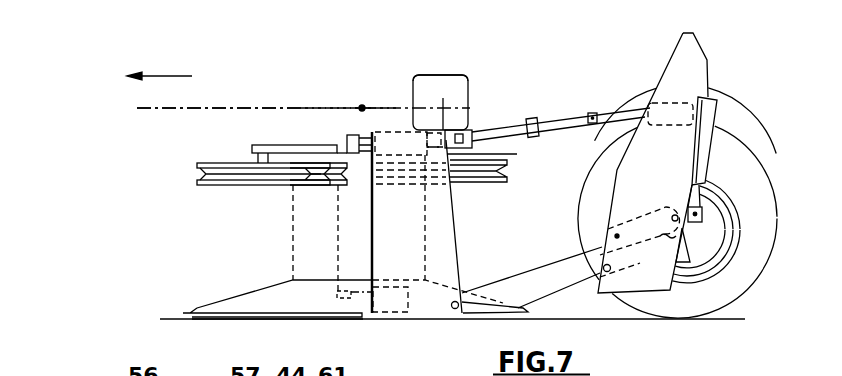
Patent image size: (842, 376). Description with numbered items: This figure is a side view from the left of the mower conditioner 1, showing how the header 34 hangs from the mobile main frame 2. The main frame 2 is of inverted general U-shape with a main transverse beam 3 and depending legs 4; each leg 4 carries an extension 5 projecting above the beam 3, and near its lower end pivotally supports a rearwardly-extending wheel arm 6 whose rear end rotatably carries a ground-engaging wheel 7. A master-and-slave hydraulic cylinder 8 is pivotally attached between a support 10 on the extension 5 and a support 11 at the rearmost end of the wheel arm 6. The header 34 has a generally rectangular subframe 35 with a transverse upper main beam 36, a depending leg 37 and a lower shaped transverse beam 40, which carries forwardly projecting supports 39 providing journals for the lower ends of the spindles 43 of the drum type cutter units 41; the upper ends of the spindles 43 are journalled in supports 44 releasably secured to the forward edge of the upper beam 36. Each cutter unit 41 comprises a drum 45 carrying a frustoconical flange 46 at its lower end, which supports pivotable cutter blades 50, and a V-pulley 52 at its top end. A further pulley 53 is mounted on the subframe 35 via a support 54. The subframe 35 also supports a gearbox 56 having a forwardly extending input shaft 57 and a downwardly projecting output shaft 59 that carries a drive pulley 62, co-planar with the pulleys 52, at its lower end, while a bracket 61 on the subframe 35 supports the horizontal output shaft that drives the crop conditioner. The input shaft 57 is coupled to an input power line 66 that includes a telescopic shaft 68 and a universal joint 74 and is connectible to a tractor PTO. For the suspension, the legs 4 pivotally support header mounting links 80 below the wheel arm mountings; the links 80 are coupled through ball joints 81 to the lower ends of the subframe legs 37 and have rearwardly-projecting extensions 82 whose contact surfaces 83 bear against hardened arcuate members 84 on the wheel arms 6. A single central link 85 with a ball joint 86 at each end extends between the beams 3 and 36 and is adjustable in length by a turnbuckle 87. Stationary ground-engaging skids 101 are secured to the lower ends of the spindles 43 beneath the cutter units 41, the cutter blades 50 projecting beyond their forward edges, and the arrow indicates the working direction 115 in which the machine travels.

The mower conditioner 1 is at (722, 71).
The mobile main frame 2 is at (610, 136).
The main transverse beam 3 is at (707, 85).
The depending legs 4 is at (607, 210).
The extensions 5 is at (675, 57).
The wheel arms 6 is at (702, 211).
The ground-engaging wheel 7 is at (767, 268).
The hydraulic cylinders 8 is at (715, 127).
The supports 10 is at (710, 98).
The supports 11 is at (717, 233).
The header 34 is at (128, 238).
The subframe 35 is at (370, 229).
The transverse upper main beam 36 is at (393, 133).
The depending leg 37 is at (370, 257).
The forwardly projecting supports 39 is at (347, 300).
The lower transverse beam 40 is at (408, 298).
The drum type cutter units 41 is at (293, 213).
The spindles 43 is at (350, 133).
The supports 44 is at (362, 106).
The drums 45 is at (293, 199).
The frustoconical flanges 46 is at (240, 296).
The cutter blades 50 is at (197, 312).
The V-pulleys 52 is at (347, 158).
The further pulley 53 is at (217, 163).
The support 54 is at (278, 146).
The gearbox 56 is at (463, 75).
The input shaft 57 is at (408, 103).
The output shaft 59 is at (507, 154).
The bracket 61 is at (454, 226).
The drive pulley 62 is at (512, 184).
The input power line 66 is at (227, 108).
The telescopic shaft 68 is at (333, 107).
The universal joint 74 is at (360, 106).
The header mounting links 80 is at (585, 285).
The ball joints 81 is at (455, 310).
The rearwardly-projecting extensions 82 is at (687, 232).
The contact surfaces 83 is at (648, 242).
The hardened arcuate members 84 is at (690, 236).
The central link 85 is at (570, 119).
The ball joint 86 is at (462, 130).
The turnbuckle 87 is at (537, 120).
The ground-engaging skids 101 is at (263, 320).
The working direction 115 is at (170, 73).